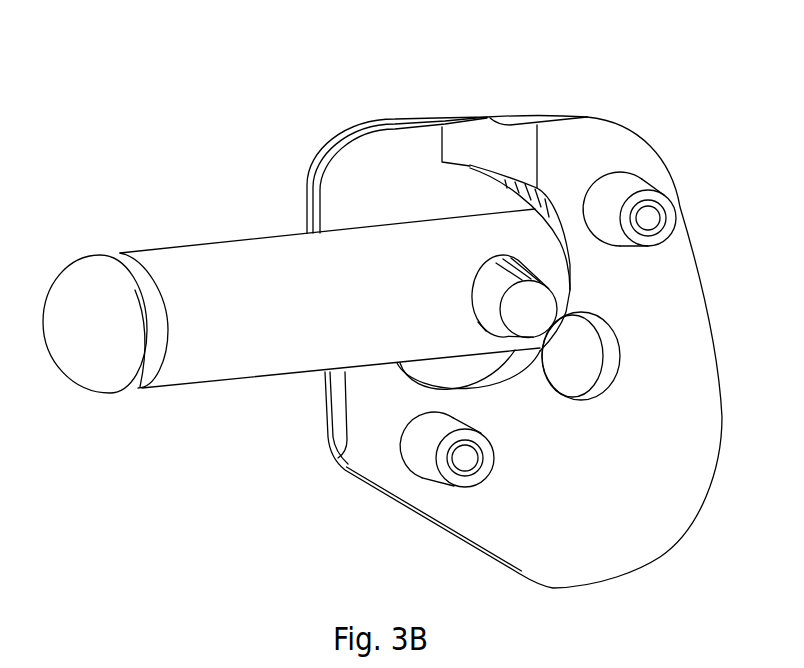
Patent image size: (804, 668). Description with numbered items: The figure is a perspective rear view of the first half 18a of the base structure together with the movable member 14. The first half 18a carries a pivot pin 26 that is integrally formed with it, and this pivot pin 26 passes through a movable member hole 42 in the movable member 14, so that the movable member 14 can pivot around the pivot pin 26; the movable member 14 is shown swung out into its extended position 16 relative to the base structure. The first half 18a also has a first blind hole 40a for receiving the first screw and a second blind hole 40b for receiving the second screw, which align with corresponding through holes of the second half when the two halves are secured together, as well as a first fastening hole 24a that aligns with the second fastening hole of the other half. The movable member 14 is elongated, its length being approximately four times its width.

The extended position 16 is at (106, 175).
The movable member 14 is at (218, 275).
The first half 18a is at (387, 152).
The movable member hole 42 is at (473, 301).
The pivot pin 26 is at (530, 309).
The first fastening hole 24a is at (565, 362).
The first blind hole 40a is at (646, 218).
The second blind hole 40b is at (464, 459).